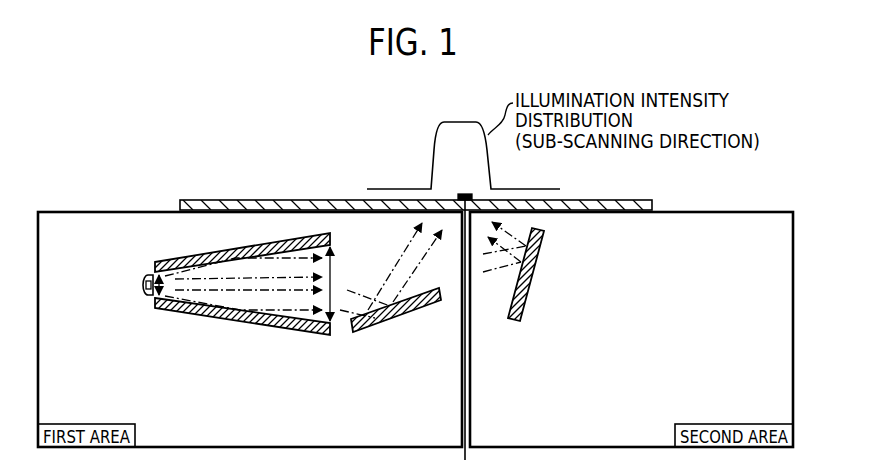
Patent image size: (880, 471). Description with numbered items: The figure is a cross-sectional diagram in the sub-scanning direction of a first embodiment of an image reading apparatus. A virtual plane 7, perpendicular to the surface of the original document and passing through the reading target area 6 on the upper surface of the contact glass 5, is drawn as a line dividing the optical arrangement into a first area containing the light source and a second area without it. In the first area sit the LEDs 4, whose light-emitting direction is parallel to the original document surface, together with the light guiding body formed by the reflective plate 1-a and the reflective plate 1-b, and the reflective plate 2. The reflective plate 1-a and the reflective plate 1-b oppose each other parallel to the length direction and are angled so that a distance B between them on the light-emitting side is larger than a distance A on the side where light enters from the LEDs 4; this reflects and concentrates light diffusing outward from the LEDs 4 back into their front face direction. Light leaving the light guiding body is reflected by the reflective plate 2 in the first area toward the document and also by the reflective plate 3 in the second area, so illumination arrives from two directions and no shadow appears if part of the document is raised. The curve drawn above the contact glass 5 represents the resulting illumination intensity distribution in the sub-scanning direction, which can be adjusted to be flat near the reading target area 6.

The reflective plate 1-a is at (270, 243).
The reflective plate 1-b is at (250, 323).
The reflective plate 2 is at (399, 333).
The reflective plate 3 is at (530, 285).
The LED 4 is at (148, 296).
The contact glass 5 is at (342, 200).
The reading target area 6 is at (472, 197).
The virtual plane 7 is at (470, 342).
The distance between the reflective plates A is at (157, 274).
The distance between the reflective plates B is at (330, 320).